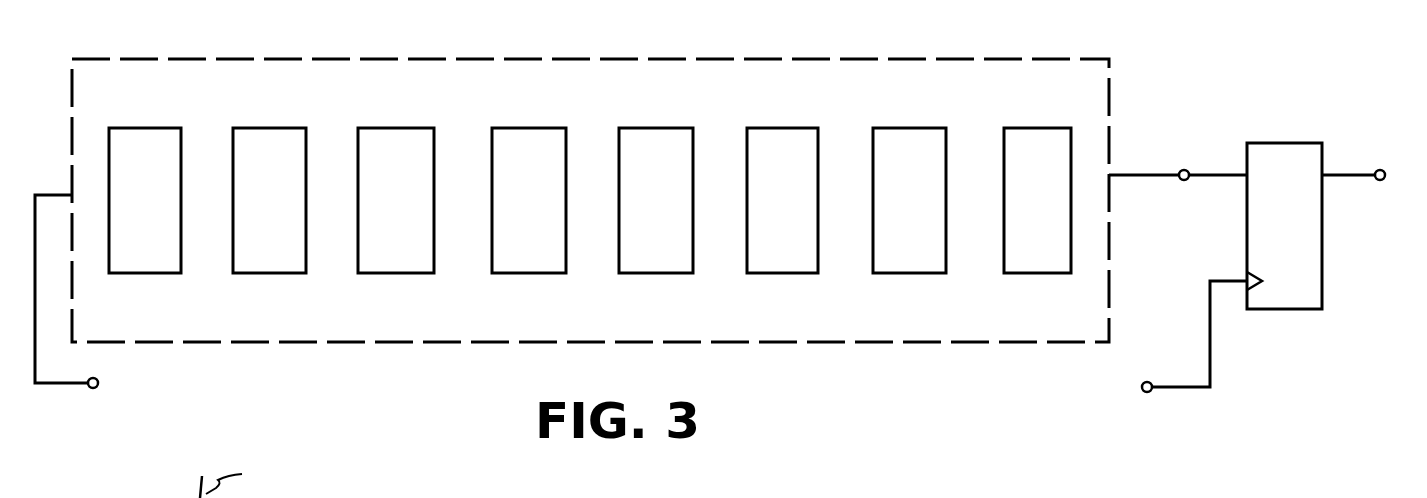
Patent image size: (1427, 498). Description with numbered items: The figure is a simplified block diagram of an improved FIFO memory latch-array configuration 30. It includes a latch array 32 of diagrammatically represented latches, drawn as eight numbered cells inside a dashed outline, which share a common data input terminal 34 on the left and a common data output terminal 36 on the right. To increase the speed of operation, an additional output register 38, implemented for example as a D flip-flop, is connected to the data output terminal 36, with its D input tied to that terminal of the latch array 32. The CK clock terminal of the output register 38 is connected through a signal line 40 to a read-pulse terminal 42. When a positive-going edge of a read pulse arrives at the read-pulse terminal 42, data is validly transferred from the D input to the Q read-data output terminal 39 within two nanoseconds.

The FIFO memory latch-array configuration 30 is at (1222, 57).
The latch array 32 is at (842, 59).
The common data input terminal 34 is at (89, 388).
The common data output terminal 36 is at (1184, 180).
The output register 38 is at (1289, 143).
The Q read-data output terminal 39 is at (1382, 170).
The signal line 40 is at (1210, 343).
The read-pulse terminal 42 is at (1143, 392).